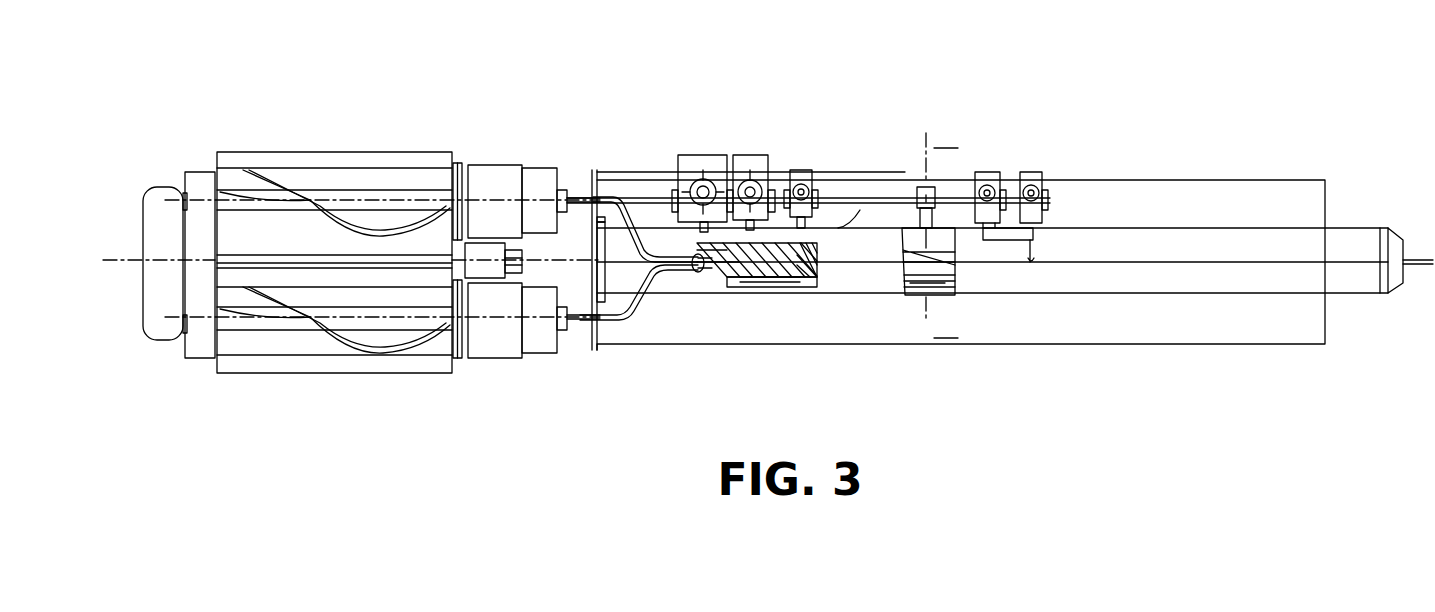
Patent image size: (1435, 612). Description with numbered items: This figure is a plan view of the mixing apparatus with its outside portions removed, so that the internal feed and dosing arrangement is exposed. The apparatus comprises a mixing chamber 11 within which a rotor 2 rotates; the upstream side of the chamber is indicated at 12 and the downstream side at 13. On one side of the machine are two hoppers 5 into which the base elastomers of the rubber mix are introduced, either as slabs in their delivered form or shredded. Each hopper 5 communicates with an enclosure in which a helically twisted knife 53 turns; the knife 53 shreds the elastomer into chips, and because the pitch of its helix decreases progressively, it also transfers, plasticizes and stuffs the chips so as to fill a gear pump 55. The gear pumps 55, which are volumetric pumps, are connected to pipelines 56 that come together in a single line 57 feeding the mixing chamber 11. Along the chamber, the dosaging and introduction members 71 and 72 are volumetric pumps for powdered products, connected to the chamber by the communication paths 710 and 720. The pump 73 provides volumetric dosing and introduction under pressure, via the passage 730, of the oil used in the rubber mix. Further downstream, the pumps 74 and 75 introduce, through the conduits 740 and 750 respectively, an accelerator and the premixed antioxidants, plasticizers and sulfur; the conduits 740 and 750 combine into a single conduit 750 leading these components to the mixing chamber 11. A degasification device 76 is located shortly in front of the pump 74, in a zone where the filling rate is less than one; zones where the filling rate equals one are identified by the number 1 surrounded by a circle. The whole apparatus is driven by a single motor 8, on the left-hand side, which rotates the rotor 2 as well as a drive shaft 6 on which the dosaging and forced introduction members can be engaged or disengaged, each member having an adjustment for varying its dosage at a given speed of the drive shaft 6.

The filling rate indicator 1 is at (763, 278).
The rotor 2 is at (743, 272).
The hopper 5 is at (242, 150).
The drive shaft 6 is at (838, 226).
The motor 8 is at (147, 318).
The mixing chamber 11 is at (945, 287).
The upstream side 12 is at (642, 81).
The downstream side 13 is at (1264, 157).
The helically twisted knife 53 is at (357, 218).
The gear pump 55 is at (496, 163).
The pipeline 56 is at (633, 220).
The single line 57 is at (673, 262).
The dosaging and introduction member 71 is at (692, 150).
The dosaging and introduction member 72 is at (750, 150).
The pump 73 is at (802, 168).
The pump 74 is at (992, 167).
The pump 75 is at (1047, 171).
The degasification device 76 is at (939, 185).
The communication path 710 is at (732, 277).
The communication path 720 is at (818, 282).
The passage 730 is at (860, 198).
The conduit 740 is at (985, 243).
The conduit 750 is at (1032, 245).